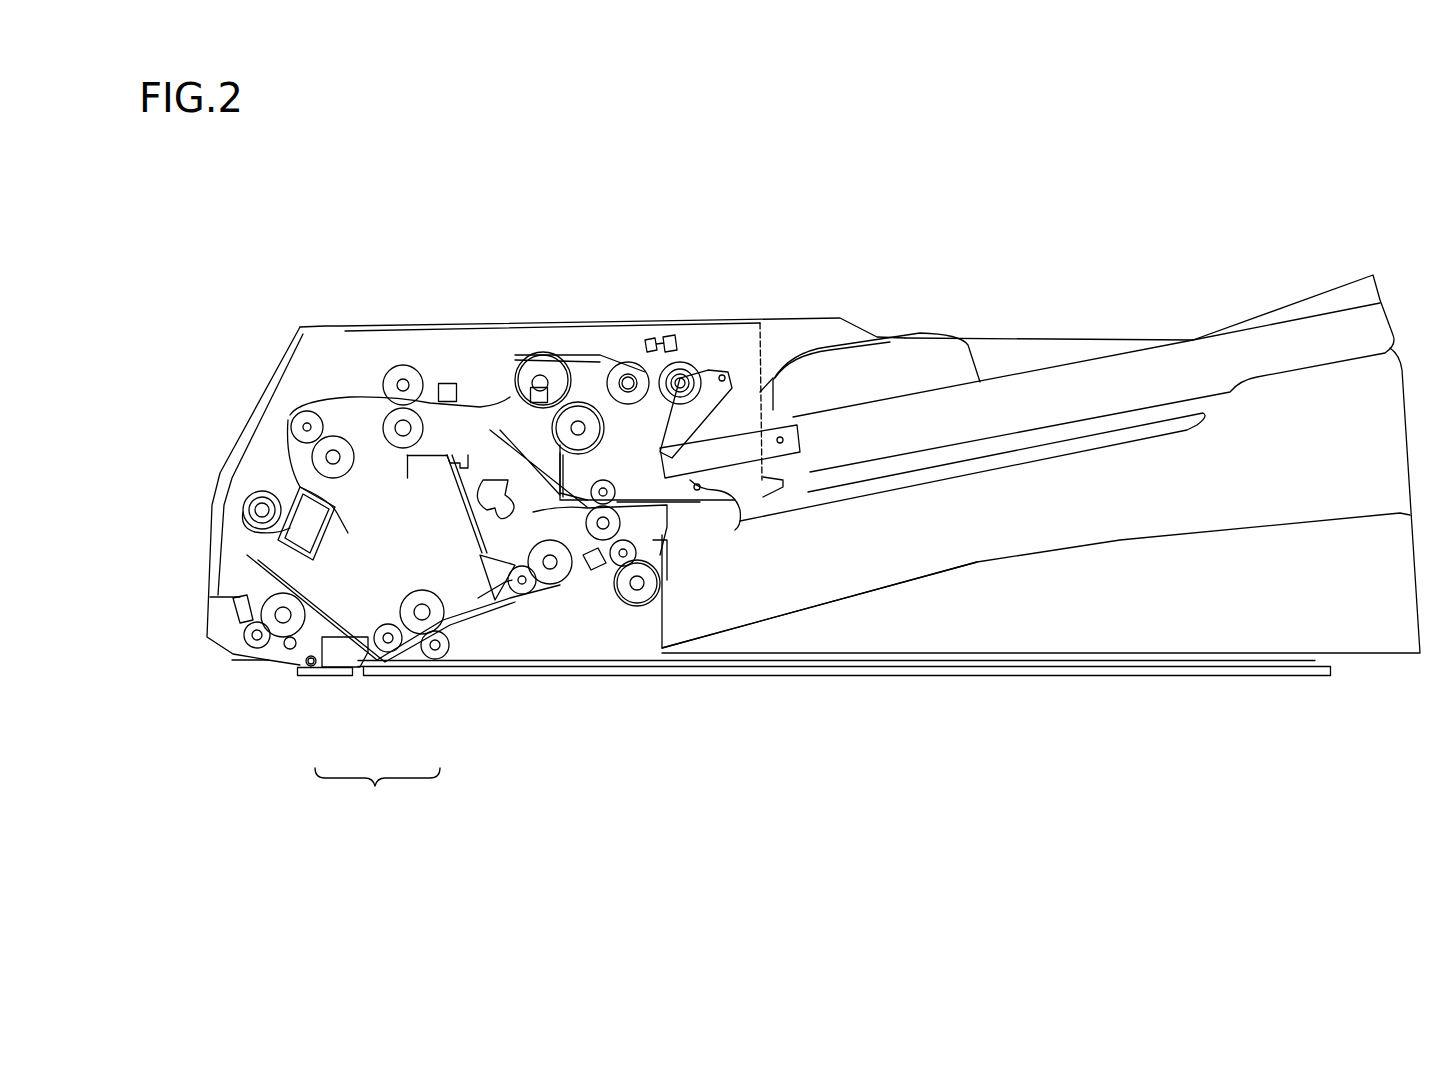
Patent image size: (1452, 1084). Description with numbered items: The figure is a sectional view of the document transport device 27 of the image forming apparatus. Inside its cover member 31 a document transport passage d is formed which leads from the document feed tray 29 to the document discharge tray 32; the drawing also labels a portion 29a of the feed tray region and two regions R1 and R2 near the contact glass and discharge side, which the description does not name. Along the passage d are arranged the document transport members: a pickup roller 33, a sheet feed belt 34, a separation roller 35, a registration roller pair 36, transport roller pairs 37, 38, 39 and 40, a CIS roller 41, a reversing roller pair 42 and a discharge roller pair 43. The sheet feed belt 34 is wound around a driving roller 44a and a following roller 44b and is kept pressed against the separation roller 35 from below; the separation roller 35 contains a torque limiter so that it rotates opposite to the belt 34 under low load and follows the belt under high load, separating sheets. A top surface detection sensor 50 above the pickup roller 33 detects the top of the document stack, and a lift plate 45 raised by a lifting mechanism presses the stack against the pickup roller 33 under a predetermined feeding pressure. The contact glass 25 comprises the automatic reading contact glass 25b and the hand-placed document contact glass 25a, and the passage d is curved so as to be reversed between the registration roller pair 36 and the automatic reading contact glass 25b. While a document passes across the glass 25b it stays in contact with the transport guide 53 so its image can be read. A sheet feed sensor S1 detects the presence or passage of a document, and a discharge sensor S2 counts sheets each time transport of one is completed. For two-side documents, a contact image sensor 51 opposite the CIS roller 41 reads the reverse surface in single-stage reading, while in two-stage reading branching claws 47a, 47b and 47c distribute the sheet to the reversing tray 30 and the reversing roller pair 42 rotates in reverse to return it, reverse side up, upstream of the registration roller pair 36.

The document transport device 27 is at (500, 225).
The cover member 31 is at (316, 322).
The document feed tray 29 is at (1197, 340).
The cover portion 29a is at (935, 340).
The reversing tray 30 is at (1123, 441).
The document discharge tray 32 is at (1020, 543).
The second discharge region R2 is at (873, 674).
The contact glass 25 is at (377, 794).
The hand-placed document contact glass 25a is at (475, 677).
The automatic reading contact glass 25b is at (310, 676).
The reading position R1 is at (345, 677).
The transport roller pair 38 is at (255, 650).
The transport guide 53 is at (340, 647).
The transport roller pair 39 is at (401, 605).
The CIS roller 41 is at (258, 492).
The contact image sensor 51 is at (240, 507).
The transport roller pair 37 is at (297, 412).
The document transport passage d is at (380, 420).
The registration roller pair 36 is at (400, 365).
The sheet feed sensor S1 is at (447, 382).
The driving roller 44a is at (530, 370).
The sheet feed belt 34 is at (552, 356).
The separation roller 35 is at (580, 402).
The following roller 44b is at (628, 362).
The top surface detection sensor 50 is at (676, 345).
The pickup roller 33 is at (713, 370).
The lift plate 45 is at (740, 440).
The reversing roller pair 42 is at (617, 523).
The branching claw 47c is at (470, 512).
The branching claw 47a is at (478, 595).
The branching claw 47b is at (523, 593).
The discharge sensor S2 is at (598, 572).
The transport roller pair 40 is at (612, 575).
The discharge roller pair 43 is at (637, 607).